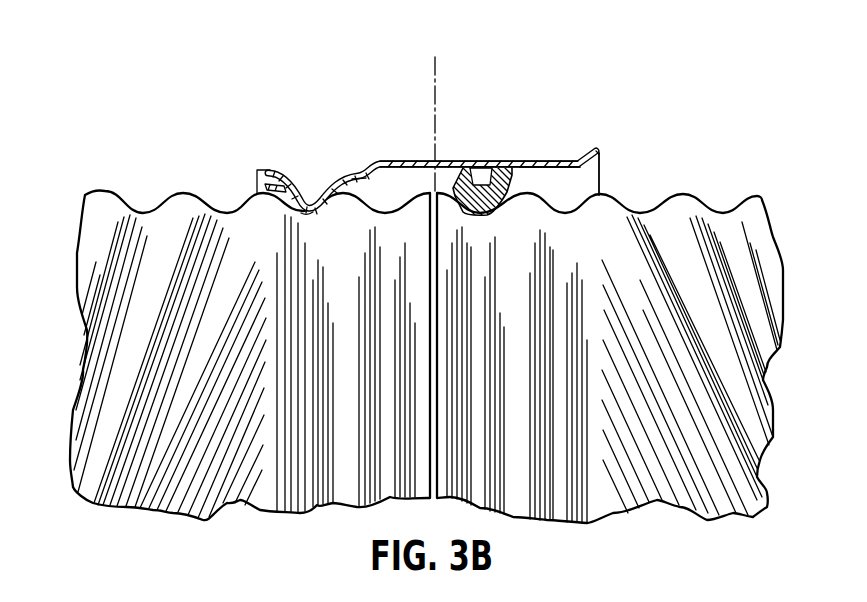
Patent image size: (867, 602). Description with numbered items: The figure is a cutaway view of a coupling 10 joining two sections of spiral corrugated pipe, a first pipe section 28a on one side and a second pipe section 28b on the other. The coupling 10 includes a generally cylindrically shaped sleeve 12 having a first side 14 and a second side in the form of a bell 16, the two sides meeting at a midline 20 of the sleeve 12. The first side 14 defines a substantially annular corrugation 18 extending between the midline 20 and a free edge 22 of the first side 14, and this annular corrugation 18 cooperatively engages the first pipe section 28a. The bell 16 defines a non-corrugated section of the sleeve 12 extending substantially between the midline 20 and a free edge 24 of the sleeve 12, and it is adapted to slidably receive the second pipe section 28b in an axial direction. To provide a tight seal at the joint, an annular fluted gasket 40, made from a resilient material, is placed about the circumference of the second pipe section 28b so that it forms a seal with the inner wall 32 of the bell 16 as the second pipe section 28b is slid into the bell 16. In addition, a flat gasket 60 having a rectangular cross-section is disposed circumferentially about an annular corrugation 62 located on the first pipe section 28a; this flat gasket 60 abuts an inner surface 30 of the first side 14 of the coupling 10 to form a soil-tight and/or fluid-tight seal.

The coupling 10 is at (421, 157).
The sleeve 12 is at (456, 161).
The first side 14 is at (398, 186).
The bell 16 is at (511, 159).
The annular corrugation 18 is at (307, 195).
The midline 20 is at (436, 107).
The free edge 22 is at (257, 170).
The free edge 24 is at (599, 153).
The first pipe section 28a is at (310, 512).
The second pipe section 28b is at (557, 522).
The inner surface 30 is at (361, 183).
The inner wall 32 is at (540, 168).
The fluted gasket 40 is at (513, 169).
The flat gasket 60 is at (326, 202).
The annular corrugation 62 is at (290, 203).